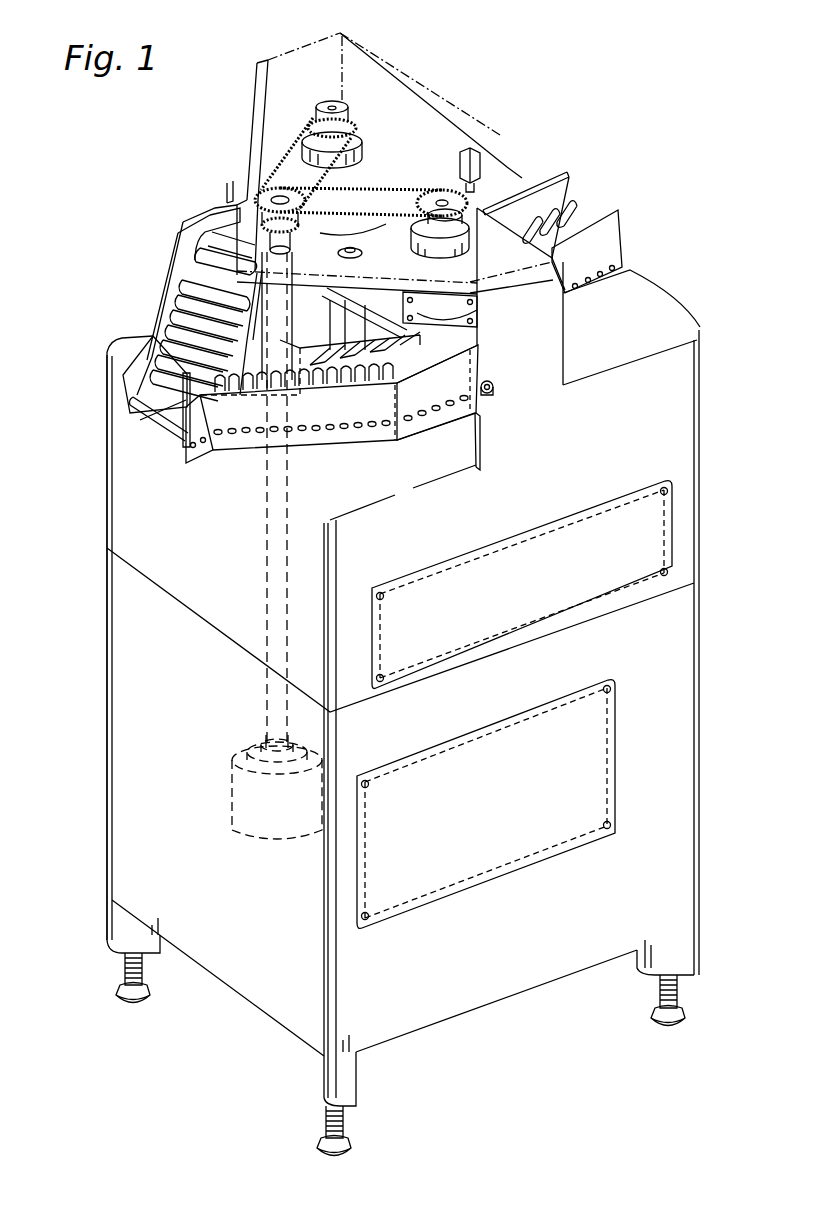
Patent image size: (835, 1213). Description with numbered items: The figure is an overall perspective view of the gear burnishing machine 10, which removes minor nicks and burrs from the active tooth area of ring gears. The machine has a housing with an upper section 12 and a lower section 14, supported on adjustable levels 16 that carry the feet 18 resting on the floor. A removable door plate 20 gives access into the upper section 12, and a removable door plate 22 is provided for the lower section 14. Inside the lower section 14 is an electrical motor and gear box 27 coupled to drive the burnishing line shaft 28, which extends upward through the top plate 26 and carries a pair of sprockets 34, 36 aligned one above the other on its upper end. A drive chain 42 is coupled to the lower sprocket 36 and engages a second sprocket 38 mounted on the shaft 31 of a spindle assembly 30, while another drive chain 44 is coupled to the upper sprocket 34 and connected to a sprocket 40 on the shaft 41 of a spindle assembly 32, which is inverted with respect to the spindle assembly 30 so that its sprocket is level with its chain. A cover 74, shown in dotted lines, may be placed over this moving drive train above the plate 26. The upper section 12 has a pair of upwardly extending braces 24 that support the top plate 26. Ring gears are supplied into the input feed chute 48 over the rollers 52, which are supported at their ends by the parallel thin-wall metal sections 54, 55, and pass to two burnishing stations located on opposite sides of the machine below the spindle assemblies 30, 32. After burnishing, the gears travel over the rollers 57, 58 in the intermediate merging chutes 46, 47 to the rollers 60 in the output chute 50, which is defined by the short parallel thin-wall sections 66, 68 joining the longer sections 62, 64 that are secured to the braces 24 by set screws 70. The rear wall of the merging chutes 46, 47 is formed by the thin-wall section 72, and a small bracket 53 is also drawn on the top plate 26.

The burnishing machine 10 is at (92, 540).
The upper section 12 is at (130, 513).
The lower section 14 is at (130, 610).
The adjustable levels 16 is at (124, 970).
The feet 18 is at (118, 1003).
The removable door plate 20 is at (519, 609).
The removable door plate 22 is at (498, 807).
The braces 24 is at (544, 324).
The top plate 26 is at (370, 138).
The electrical motor and gear box 27 is at (236, 795).
The burnishing line shaft 28 is at (267, 703).
The spindle assembly 30 is at (326, 101).
The shaft 31 is at (334, 104).
The spindle assembly 32 is at (435, 180).
The upper sprocket 34 is at (262, 195).
The lower sprocket 36 is at (262, 220).
The second sprocket 38 is at (350, 112).
The sprocket 40 is at (437, 210).
The shaft 41 is at (428, 238).
The drive chain 42 is at (292, 150).
The drive chain 44 is at (385, 185).
The intermediate merging chute 46 is at (162, 270).
The intermediate merging chute 47 is at (380, 445).
The input feed chute 48 is at (616, 199).
The output chute 50 is at (152, 430).
The rollers 52 is at (572, 207).
The sensor bracket 53 is at (478, 154).
The thin-wall metal section 54 is at (566, 172).
The thin-wall metal section 55 is at (612, 246).
The rollers 57 is at (185, 299).
The rollers 58 is at (418, 425).
The rollers 60 is at (142, 416).
The longer section 62 is at (190, 249).
The longer section 64 is at (338, 436).
The short thin-wall section 66 is at (200, 462).
The short thin-wall section 68 is at (135, 391).
The set screws 70 is at (494, 396).
The thin-wall section 72 is at (327, 362).
The cover 74 is at (266, 71).